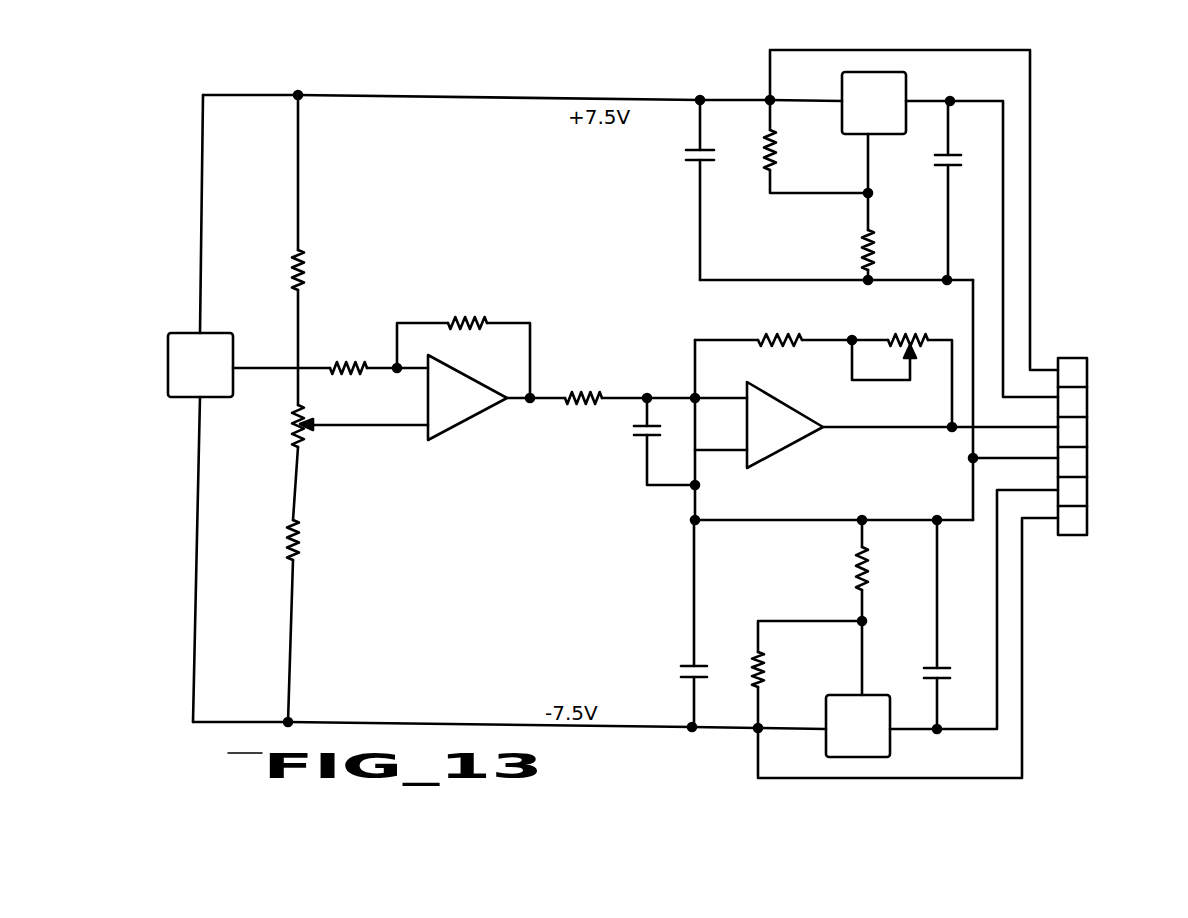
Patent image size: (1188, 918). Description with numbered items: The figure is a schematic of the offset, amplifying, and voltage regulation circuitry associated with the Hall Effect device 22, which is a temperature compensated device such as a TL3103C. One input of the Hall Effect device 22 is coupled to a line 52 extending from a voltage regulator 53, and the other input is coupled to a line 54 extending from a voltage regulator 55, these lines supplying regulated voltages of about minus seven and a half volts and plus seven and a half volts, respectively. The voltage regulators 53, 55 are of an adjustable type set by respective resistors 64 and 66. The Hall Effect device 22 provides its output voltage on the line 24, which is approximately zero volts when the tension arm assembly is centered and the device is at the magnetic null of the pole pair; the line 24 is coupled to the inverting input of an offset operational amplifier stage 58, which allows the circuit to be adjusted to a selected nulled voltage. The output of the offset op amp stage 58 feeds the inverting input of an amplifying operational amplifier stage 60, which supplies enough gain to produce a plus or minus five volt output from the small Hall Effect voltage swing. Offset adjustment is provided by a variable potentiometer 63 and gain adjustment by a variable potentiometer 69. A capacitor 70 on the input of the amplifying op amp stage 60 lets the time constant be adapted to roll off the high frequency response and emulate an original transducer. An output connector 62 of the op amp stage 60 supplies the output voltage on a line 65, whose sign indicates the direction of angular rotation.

The Hall Effect device 22 is at (168, 366).
The output line 24 is at (262, 368).
The line 52 is at (205, 724).
The voltage regulator 53 is at (906, 751).
The line 54 is at (258, 95).
The voltage regulator 55 is at (924, 84).
The offset operational amplifier stage 58 is at (478, 437).
The amplifying operational amplifier stage 60 is at (791, 459).
The output connector 62 is at (1075, 358).
The variable potentiometer 63 is at (300, 440).
The resistors 64 is at (862, 558).
The line 65 is at (1030, 427).
The resistors 66 is at (872, 247).
The variable potentiometer 69 is at (903, 327).
The capacitor 70 is at (642, 432).